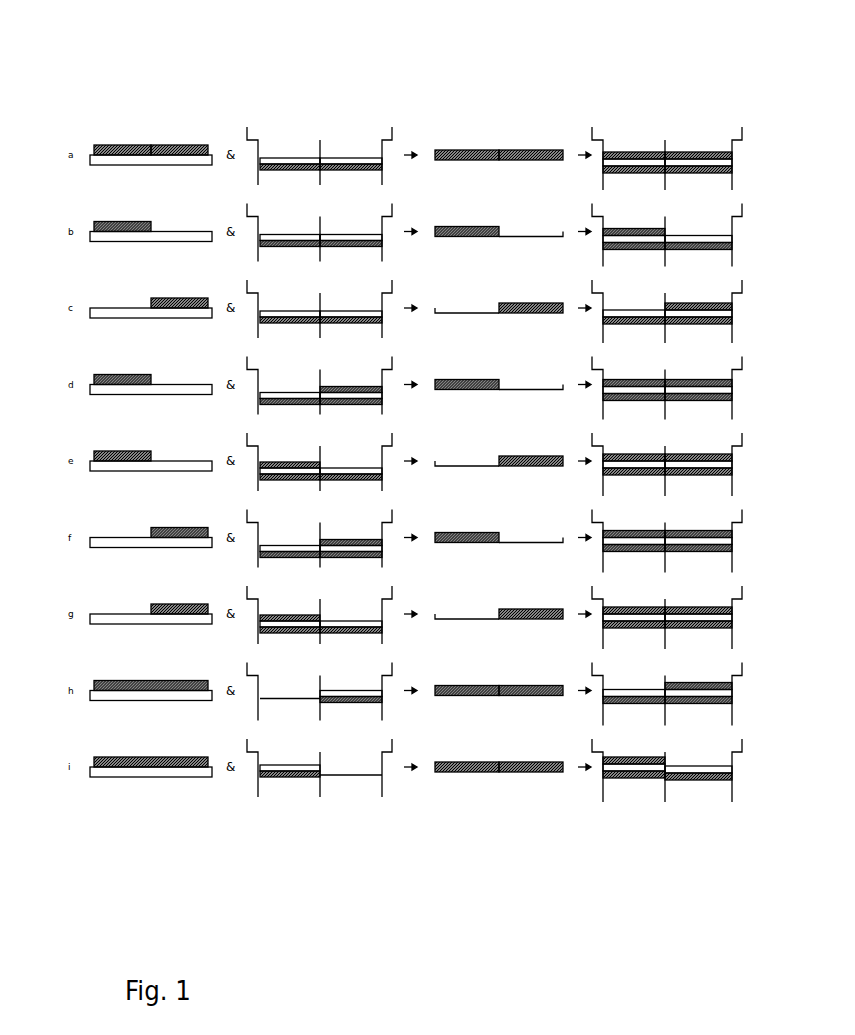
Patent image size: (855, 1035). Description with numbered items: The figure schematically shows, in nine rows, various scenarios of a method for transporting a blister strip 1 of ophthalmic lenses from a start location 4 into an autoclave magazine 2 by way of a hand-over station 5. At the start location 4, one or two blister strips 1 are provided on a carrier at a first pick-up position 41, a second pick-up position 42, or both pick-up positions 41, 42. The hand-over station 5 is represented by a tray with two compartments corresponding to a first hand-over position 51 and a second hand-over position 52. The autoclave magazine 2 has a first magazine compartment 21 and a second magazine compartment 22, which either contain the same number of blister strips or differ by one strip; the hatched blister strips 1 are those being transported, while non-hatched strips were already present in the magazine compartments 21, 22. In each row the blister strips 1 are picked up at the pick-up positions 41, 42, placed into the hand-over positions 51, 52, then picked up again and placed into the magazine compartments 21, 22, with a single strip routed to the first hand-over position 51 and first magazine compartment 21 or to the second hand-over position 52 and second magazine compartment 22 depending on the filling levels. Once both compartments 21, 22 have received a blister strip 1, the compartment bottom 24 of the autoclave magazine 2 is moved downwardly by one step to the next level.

The blister strip 1 is at (112, 803).
The autoclave magazine 2 is at (494, 98).
The first magazine compartment 21 is at (286, 114).
The second magazine compartment 22 is at (353, 114).
The compartment bottom 24 is at (720, 800).
The start location 4 is at (158, 89).
The first pick-up position 41 is at (118, 114).
The second pick-up position 42 is at (186, 112).
The hand-over station 5 is at (492, 87).
The first hand-over position 51 is at (452, 114).
The second hand-over position 52 is at (519, 115).